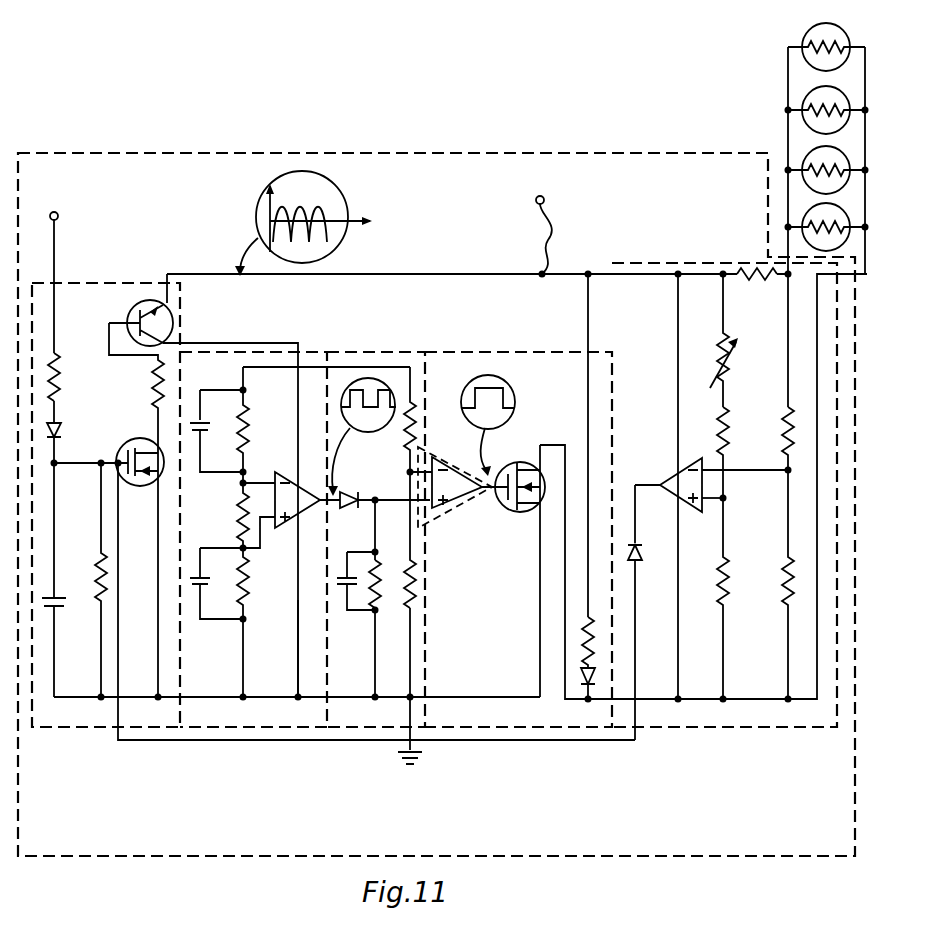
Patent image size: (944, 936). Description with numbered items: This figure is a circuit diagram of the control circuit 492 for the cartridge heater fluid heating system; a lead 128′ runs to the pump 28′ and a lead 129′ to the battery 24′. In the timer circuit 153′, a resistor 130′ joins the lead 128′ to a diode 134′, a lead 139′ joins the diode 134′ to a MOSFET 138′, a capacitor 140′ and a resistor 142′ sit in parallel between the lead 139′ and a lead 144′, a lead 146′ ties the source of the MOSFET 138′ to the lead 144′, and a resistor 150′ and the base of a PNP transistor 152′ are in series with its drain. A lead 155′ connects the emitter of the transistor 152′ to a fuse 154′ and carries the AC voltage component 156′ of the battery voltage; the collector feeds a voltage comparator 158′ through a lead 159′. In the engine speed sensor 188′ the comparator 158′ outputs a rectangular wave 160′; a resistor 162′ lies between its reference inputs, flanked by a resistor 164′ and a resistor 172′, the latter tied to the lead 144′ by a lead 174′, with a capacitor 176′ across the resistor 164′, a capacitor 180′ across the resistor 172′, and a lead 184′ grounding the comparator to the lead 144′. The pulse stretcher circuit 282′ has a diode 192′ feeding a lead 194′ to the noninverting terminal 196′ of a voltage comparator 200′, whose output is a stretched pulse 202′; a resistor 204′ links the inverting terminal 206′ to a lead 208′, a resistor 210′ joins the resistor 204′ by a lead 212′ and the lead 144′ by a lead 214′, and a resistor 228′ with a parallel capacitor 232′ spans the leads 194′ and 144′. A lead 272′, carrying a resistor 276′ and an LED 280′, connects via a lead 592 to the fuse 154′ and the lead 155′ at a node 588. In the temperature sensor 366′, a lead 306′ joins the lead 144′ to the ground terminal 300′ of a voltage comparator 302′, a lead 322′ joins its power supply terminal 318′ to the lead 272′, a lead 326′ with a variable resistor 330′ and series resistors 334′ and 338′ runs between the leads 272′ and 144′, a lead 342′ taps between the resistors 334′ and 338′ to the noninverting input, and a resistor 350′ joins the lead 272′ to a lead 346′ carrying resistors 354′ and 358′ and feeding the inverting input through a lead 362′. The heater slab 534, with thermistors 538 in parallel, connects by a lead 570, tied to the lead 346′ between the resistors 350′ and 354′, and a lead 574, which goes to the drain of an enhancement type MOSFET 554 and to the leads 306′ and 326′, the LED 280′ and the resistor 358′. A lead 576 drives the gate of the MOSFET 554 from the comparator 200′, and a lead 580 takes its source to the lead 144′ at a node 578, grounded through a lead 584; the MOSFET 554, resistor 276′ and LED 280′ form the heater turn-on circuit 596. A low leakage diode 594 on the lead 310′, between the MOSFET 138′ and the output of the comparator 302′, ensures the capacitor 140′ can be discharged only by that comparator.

The control circuit 492 is at (60, 858).
The timer circuit 153′ is at (40, 728).
The engine speed sensor circuit 188′ is at (188, 728).
The pulse stretcher circuit 282′ is at (338, 728).
The heater turn-on circuit 596 is at (500, 728).
The temperature sensor circuit 366′ is at (730, 240).
The pump 28′ is at (79, 203).
The battery 24′ is at (576, 187).
The lead 128′ is at (64, 258).
The lead 129′ is at (540, 212).
The resistor 130′ is at (73, 377).
The diode 134′ is at (70, 428).
The MOSFET 138′ is at (138, 444).
The lead 139′ is at (84, 462).
The capacitor 140′ is at (82, 612).
The resistor 142′ is at (98, 572).
The lead 144′ is at (90, 696).
The lead 146′ is at (160, 604).
The resistor 150′ is at (158, 384).
The PNP transistor 152′ is at (128, 314).
The fuse 154′ is at (540, 260).
The lead 155′ is at (428, 276).
The AC voltage component 156′ is at (334, 188).
The voltage comparator 158′ is at (300, 470).
The lead 159′ is at (202, 324).
The rectangular wave 160′ is at (366, 364).
The resistor 162′ is at (238, 504).
The resistor 164′ is at (250, 442).
The resistor 172′ is at (258, 590).
The lead 174′ is at (242, 656).
The capacitor 176′ is at (218, 436).
The capacitor 180′ is at (216, 542).
The lead 184′ is at (298, 648).
The diode 192′ is at (344, 476).
The lead 194′ is at (394, 484).
The noninverting input terminal 196′ is at (366, 534).
The voltage comparator 200′ is at (452, 514).
The stretched pulse 202′ is at (508, 396).
The resistor 204′ is at (426, 396).
The inverting input terminal 206′ is at (444, 444).
The lead 208′ is at (316, 355).
The resistor 210′ is at (414, 584).
The lead 212′ is at (414, 560).
The lead 214′ is at (412, 668).
The resistor 228′ is at (382, 602).
The capacitor 232′ is at (335, 600).
The lead 272′ is at (622, 286).
The resistor 276′ is at (556, 642).
The light emitting diode 280′ is at (574, 688).
The ground terminal 300′ is at (694, 512).
The voltage comparator 302′ is at (680, 470).
The lead 306′ is at (678, 652).
The lead 310′ is at (118, 700).
The power supply terminal 318′ is at (678, 458).
The lead 322′ is at (678, 388).
The lead 326′ is at (726, 650).
The variable resistor 330′ is at (742, 363).
The resistor 334′ is at (726, 424).
The resistor 338′ is at (726, 578).
The lead 342′ is at (722, 498).
The lead 346′ is at (784, 336).
The resistor 350′ is at (752, 280).
The resistor 354′ is at (786, 416).
The resistor 358′ is at (784, 594).
The lead 362′ is at (784, 462).
The heater slab 534 is at (788, 93).
The thermistors 538 is at (808, 30).
The MOSFET 554 is at (514, 468).
The lead 570 is at (788, 170).
The lead 574 is at (564, 444).
The lead 576 is at (536, 571).
The node 578 is at (400, 700).
The lead 580 is at (538, 598).
The lead 584 is at (414, 704).
The node 588 is at (540, 276).
The lead 592 is at (560, 276).
The low leakage diode 594 is at (644, 556).